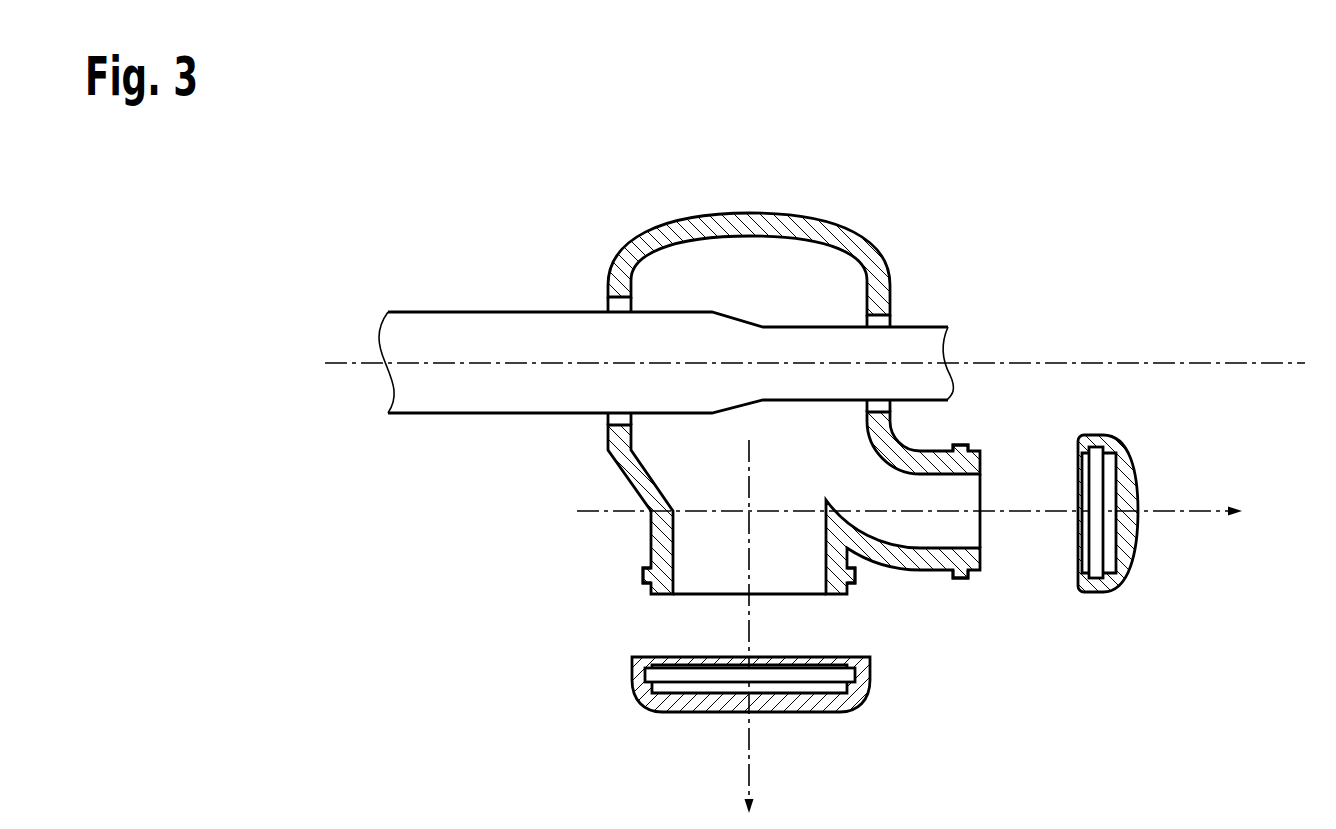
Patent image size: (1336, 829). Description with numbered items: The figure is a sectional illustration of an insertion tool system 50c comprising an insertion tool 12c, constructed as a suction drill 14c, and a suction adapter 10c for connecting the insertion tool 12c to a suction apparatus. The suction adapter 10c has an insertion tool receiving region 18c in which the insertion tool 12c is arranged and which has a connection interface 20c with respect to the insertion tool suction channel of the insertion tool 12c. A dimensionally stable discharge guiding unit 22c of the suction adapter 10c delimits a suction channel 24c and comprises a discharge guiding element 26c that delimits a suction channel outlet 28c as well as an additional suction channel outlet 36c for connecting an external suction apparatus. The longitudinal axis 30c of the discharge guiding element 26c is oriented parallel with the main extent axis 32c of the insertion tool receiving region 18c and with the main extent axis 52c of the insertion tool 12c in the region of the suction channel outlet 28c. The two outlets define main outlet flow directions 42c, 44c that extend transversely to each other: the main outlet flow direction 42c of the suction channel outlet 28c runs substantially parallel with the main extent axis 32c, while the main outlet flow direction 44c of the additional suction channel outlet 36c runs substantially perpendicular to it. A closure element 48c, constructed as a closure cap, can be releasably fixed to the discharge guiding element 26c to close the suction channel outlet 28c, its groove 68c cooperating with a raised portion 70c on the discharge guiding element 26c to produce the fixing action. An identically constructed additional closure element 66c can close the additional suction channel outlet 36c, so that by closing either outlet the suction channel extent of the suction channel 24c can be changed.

The suction adapter 10c is at (728, 552).
The insertion tool 12c is at (666, 316).
The suction drill 14c is at (467, 323).
The insertion tool receiving region 18c is at (749, 290).
The connection interface 20c is at (714, 265).
The discharge guiding unit 22c is at (939, 568).
The suction channel 24c is at (798, 476).
The discharge guiding element 26c is at (920, 558).
The suction channel outlet 28c is at (988, 538).
The longitudinal axis 30c is at (926, 566).
The main extent axis 32c is at (821, 421).
The additional suction channel outlet 36c is at (706, 597).
The main outlet flow direction 42c is at (1218, 522).
The main outlet flow direction 44c is at (750, 746).
The closure element 48c is at (1104, 593).
The insertion tool system 50c is at (605, 733).
The main extent axis 52c is at (1260, 367).
The additional closure element 66c is at (670, 712).
The groove 68c is at (645, 676).
The raised portion 70c is at (643, 577).